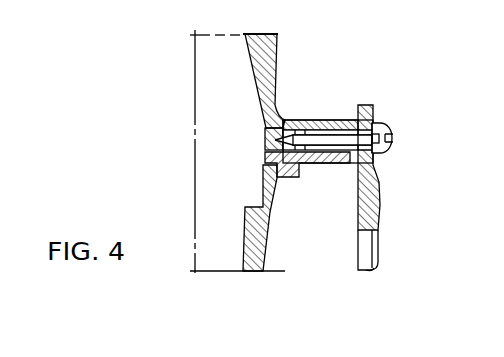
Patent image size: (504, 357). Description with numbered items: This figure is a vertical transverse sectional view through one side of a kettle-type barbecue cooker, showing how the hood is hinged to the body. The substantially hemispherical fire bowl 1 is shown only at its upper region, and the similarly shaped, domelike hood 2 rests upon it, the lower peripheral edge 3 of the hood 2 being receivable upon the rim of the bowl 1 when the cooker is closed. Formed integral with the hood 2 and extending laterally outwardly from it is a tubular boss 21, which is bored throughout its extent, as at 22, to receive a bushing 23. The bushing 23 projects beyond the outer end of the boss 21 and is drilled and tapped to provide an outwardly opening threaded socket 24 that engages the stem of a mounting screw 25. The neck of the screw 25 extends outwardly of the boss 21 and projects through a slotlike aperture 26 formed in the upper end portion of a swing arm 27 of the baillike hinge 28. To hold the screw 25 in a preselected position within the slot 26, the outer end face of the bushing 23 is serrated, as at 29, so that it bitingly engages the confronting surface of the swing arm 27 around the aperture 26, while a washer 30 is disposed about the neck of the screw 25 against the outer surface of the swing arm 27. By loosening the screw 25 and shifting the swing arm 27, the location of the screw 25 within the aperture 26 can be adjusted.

The fire bowl 1 is at (265, 258).
The hood 2 is at (268, 47).
The lower peripheral edge 3 is at (266, 160).
The tubular boss 21 is at (288, 122).
The bore 22 is at (301, 121).
The bushing 23 is at (267, 135).
The threaded socket 24 is at (318, 124).
The mounting screw 25 is at (340, 128).
The slotlike aperture 26 is at (376, 166).
The swing arm 27 is at (382, 248).
The baillike hinge 28 is at (373, 271).
The serrated end face 29 is at (379, 120).
The washer 30 is at (377, 123).